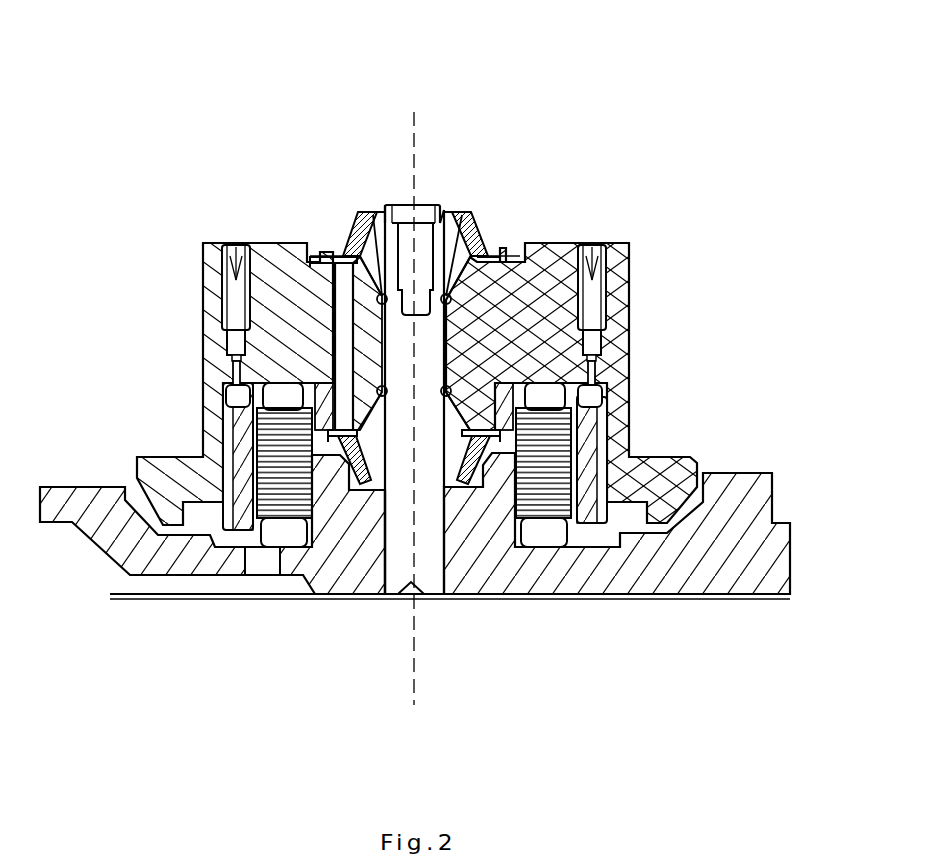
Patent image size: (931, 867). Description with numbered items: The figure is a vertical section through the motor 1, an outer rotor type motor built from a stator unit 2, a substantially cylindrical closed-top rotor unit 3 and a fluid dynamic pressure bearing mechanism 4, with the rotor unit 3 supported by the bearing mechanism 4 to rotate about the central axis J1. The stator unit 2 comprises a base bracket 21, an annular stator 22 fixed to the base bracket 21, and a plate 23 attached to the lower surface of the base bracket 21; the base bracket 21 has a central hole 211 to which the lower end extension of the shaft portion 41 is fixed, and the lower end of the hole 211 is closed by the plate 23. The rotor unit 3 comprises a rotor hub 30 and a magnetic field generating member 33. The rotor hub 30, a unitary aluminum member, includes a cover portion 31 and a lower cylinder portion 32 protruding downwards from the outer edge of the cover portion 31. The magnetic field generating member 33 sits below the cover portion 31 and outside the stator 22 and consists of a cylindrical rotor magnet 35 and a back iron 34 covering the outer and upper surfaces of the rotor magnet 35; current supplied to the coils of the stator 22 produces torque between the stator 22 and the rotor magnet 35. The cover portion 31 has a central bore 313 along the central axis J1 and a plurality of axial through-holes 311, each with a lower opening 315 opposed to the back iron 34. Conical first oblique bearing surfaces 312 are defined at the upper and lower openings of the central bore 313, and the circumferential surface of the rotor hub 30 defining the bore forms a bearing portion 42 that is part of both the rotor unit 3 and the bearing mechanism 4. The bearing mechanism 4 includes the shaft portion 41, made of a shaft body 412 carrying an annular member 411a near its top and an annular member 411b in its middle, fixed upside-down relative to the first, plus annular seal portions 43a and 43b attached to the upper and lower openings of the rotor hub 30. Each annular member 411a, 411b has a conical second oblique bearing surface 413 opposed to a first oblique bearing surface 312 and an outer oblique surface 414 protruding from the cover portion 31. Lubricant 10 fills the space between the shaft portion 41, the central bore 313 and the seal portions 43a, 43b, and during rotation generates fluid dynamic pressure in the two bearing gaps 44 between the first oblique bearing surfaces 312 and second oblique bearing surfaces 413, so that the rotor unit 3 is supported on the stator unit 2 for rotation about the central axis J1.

The motor 1 is at (135, 205).
The stator unit 2 is at (598, 678).
The base bracket 21 is at (618, 570).
The stator 22 is at (552, 548).
The plate 23 is at (480, 596).
The central hole 211 is at (398, 596).
The rotor unit 3 is at (775, 227).
The rotor hub 30 is at (716, 290).
The cover portion 31 is at (617, 281).
The through-holes 311 is at (236, 250).
The first oblique bearing surfaces 312 is at (475, 210).
The central bore 313 is at (597, 313).
The lower opening 315 is at (230, 374).
The lower cylinder portion 32 is at (620, 400).
The magnetic field generating member 33 is at (777, 432).
The back iron 34 is at (603, 425).
The rotor magnet 35 is at (600, 455).
The fluid dynamic pressure bearing mechanism 4 is at (282, 75).
The shaft portion 41 is at (327, 148).
The annular member 411a is at (355, 283).
The annular member 411b is at (360, 442).
The shaft body 412 is at (387, 205).
The second oblique bearing surface 413 is at (345, 300).
The outer oblique surface 414 is at (360, 222).
The bearing portion 42 is at (452, 300).
The seal portion 43a is at (478, 225).
The seal portion 43b is at (362, 486).
The bearing gaps 44 is at (462, 323).
The lubricant 10 is at (474, 240).
The central axis J1 is at (414, 124).